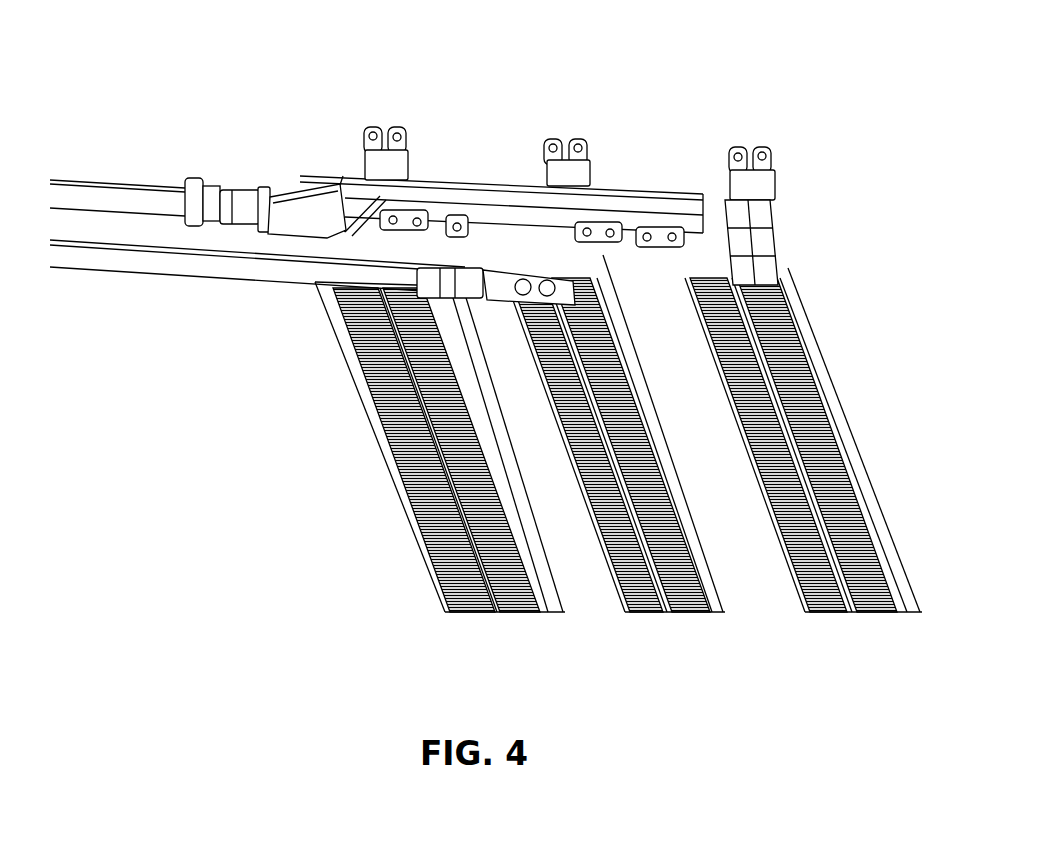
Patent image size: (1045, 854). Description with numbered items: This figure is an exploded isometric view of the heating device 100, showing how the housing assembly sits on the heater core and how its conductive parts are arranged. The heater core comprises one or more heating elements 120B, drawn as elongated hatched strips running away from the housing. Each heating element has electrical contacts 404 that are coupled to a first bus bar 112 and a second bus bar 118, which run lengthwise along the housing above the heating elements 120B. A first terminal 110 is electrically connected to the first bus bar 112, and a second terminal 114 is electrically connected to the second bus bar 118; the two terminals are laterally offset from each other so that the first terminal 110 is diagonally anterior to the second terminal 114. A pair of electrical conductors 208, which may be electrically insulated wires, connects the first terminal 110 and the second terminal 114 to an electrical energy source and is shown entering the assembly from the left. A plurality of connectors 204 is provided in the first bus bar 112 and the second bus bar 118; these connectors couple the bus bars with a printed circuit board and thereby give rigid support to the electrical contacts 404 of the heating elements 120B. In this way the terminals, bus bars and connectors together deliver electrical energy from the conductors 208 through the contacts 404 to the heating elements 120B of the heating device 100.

The heating device 100 is at (707, 660).
The first terminal 110 is at (521, 292).
The first bus bar 112 is at (428, 205).
The second terminal 114 is at (293, 210).
The second bus bar 118 is at (583, 190).
The heating elements 120B is at (818, 372).
The connectors 204 is at (374, 136).
The electrical conductors 208 is at (102, 188).
The electrical contacts 404 is at (759, 247).